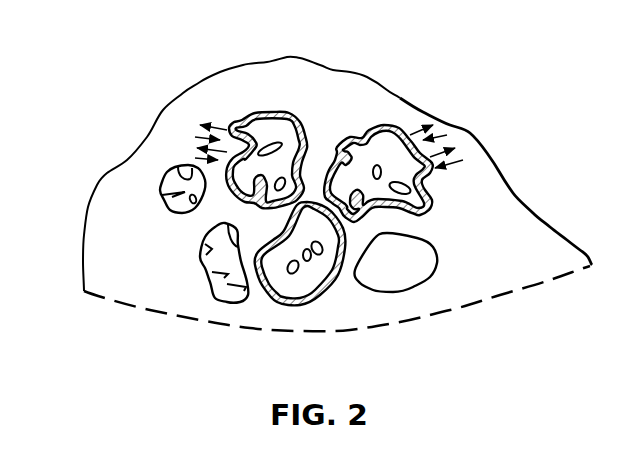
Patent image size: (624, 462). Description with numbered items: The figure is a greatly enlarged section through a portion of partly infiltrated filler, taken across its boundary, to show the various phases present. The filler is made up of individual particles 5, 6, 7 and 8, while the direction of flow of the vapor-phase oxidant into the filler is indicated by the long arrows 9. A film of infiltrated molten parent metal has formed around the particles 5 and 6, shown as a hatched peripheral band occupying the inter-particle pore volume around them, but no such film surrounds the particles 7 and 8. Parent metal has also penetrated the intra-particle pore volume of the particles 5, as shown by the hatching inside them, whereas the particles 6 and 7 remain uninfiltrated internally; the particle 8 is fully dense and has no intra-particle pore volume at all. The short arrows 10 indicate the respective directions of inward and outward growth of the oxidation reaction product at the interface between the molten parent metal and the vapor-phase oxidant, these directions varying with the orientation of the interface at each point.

The filler particles 5 is at (283, 123).
The filler particle 6 is at (335, 280).
The filler particles 7 is at (198, 262).
The filler particle 8 is at (413, 255).
The long arrows 9 is at (132, 308).
The short arrows 10 is at (192, 142).